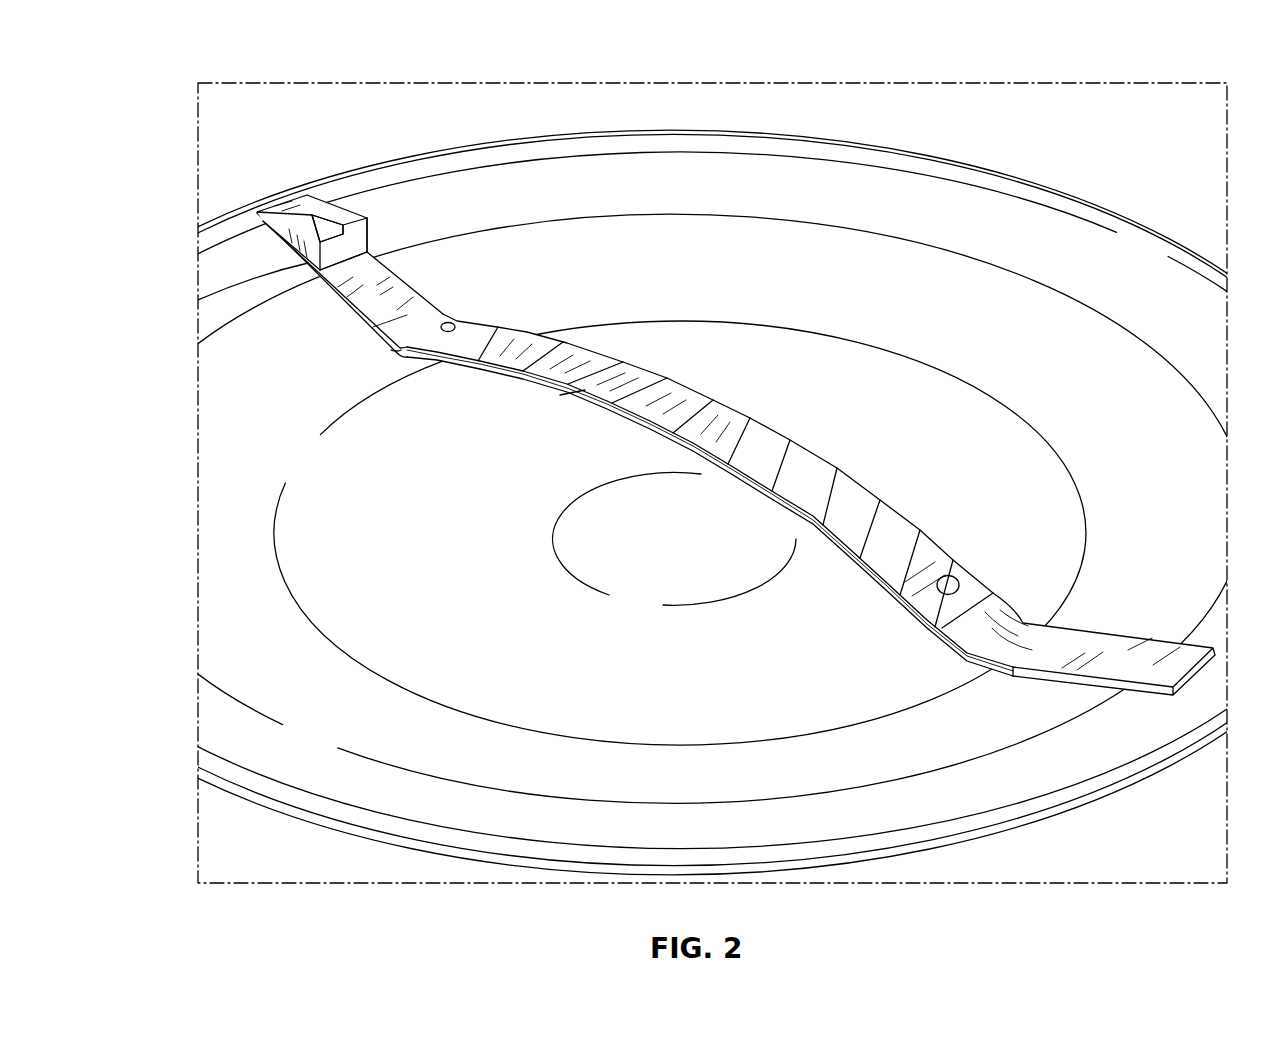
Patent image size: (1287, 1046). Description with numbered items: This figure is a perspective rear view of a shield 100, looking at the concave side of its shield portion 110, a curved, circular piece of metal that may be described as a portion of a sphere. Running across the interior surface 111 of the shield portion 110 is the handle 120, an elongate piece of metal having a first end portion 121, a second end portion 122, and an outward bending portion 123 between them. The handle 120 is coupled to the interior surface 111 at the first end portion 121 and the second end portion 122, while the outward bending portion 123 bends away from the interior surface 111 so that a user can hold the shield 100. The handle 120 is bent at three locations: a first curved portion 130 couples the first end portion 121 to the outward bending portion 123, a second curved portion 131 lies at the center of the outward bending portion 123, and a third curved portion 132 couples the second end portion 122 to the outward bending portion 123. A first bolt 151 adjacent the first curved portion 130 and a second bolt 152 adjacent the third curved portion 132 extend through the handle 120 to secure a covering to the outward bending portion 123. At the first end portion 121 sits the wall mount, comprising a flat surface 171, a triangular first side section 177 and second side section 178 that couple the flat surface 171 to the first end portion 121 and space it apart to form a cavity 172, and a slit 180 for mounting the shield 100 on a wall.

The shield 100 is at (1141, 167).
The shield portion 110 is at (913, 850).
The interior surface 111 is at (523, 818).
The handle 120 is at (856, 482).
The first end portion 121 is at (397, 300).
The second end portion 122 is at (1137, 648).
The outward bending portion 123 is at (748, 433).
The first curved portion 130 is at (338, 322).
The second curved portion 131 is at (567, 393).
The third curved portion 132 is at (1007, 640).
The first bolt 151 is at (452, 326).
The second bolt 152 is at (960, 585).
The flat surface 171 is at (288, 205).
The cavity 172 is at (305, 288).
The first side section 177 is at (310, 260).
The second side section 178 is at (370, 237).
The slit 180 is at (340, 214).